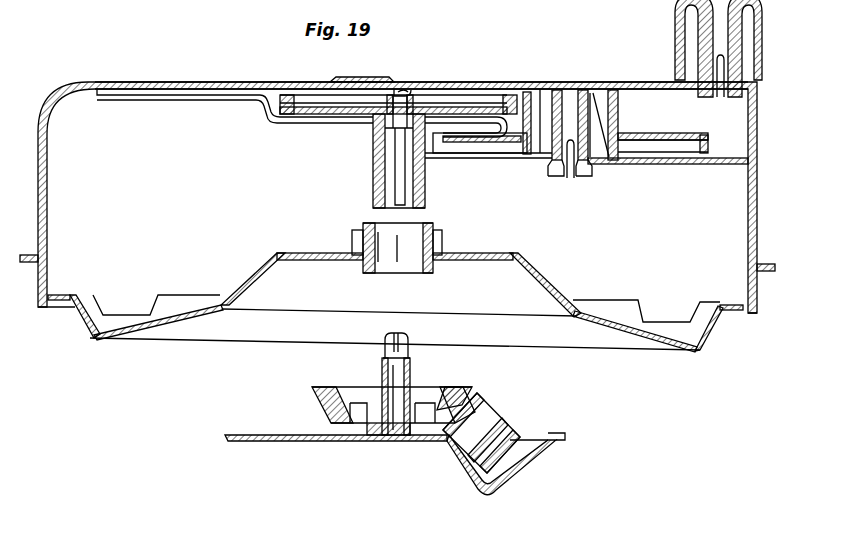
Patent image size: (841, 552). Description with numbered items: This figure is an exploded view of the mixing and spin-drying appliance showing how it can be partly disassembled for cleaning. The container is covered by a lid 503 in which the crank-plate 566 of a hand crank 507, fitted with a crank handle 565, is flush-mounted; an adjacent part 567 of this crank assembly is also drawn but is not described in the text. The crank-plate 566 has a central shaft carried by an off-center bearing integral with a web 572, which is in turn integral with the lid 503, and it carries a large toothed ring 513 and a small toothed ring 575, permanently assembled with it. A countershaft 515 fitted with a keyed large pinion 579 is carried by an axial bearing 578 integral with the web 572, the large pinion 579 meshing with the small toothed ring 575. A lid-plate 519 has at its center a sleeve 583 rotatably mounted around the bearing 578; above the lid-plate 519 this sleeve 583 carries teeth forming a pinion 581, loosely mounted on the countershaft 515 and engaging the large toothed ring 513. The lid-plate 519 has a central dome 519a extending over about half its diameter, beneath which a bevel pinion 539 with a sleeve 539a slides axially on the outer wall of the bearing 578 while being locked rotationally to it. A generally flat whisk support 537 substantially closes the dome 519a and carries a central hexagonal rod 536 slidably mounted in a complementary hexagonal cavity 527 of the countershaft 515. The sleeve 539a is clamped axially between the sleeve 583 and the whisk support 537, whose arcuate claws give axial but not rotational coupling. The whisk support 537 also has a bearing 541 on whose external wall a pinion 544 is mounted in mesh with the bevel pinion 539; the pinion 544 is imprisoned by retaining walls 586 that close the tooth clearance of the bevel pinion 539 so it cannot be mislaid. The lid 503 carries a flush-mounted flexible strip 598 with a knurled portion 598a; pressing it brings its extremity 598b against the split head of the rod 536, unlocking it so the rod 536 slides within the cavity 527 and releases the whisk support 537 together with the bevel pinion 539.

The lid 503 is at (52, 80).
The hand crank 507 is at (587, 75).
The large toothed ring 513 is at (704, 141).
The countershaft 515 is at (316, 99).
The lid-plate 519 is at (647, 360).
The dome 519a is at (260, 266).
The hexagonal cavity 527 is at (398, 157).
The hexagonal rod 536 is at (404, 375).
The whisk support 537 is at (247, 447).
The bevel pinion 539 is at (313, 398).
The sleeve 539a is at (366, 443).
The bearing 541 is at (475, 455).
The pinion 544 is at (538, 419).
The crank handle 565 is at (675, 36).
The crank-plate 566 is at (620, 90).
The bushing 567 is at (566, 89).
The web 572 is at (662, 172).
The small toothed ring 575 is at (627, 116).
The axial bearing 578 is at (428, 183).
The large pinion 579 is at (270, 114).
The pinion 581 is at (352, 243).
The sleeve 583 is at (441, 229).
The retaining walls 586 is at (470, 393).
The flexible strip 598 is at (290, 83).
The knurled portion 598a is at (390, 72).
The extremity 598b is at (406, 92).